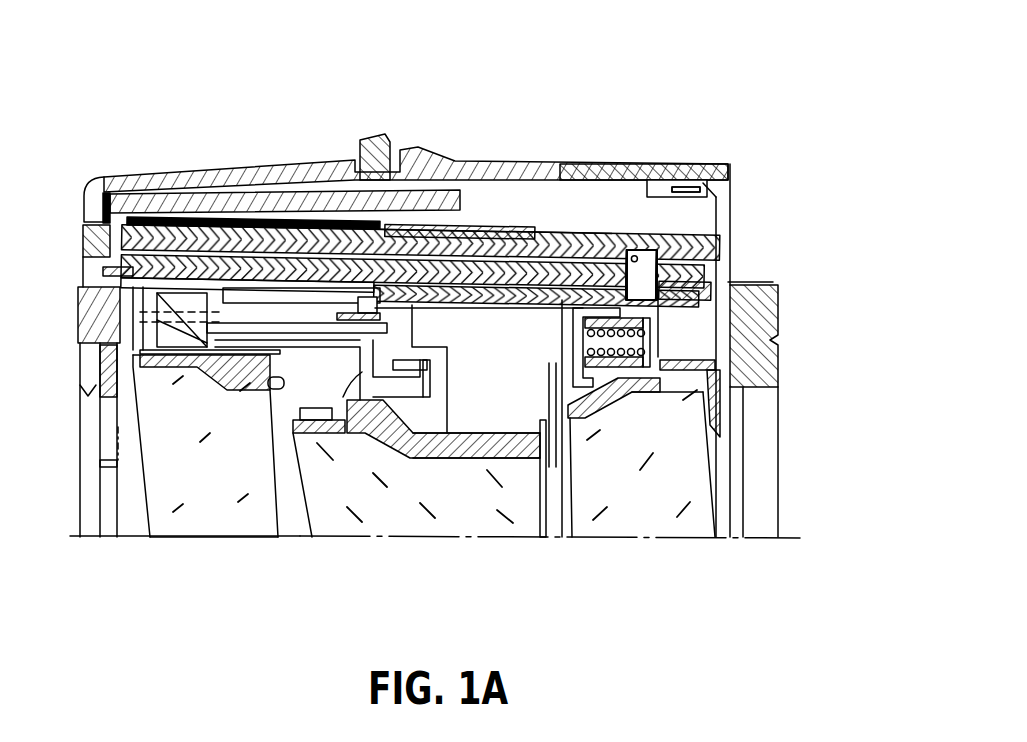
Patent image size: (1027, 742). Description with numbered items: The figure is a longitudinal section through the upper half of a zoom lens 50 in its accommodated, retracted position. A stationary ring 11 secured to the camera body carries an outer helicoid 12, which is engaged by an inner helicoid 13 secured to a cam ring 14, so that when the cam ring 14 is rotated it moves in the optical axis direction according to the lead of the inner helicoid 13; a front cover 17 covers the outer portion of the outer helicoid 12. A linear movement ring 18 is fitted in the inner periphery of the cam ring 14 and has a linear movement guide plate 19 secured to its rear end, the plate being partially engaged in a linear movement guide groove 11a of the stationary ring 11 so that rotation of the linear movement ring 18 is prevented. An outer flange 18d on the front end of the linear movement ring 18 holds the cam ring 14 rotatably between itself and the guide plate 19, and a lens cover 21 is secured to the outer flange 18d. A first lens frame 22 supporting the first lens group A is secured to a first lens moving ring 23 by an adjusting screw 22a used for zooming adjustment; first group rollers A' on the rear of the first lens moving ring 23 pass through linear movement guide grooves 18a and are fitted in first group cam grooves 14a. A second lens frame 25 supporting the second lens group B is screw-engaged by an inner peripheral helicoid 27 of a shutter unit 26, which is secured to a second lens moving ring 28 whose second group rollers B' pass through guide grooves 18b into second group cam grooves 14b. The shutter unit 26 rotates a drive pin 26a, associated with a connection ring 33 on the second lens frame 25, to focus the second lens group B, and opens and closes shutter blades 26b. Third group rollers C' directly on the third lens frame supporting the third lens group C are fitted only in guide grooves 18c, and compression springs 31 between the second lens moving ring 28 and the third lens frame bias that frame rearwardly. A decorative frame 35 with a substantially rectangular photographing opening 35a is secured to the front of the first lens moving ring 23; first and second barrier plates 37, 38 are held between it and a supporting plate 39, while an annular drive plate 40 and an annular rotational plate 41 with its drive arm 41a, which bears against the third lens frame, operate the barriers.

The pressure actuated clutch assembly 50 is at (108, 72).
The stationary ring 11 is at (752, 300).
The linear movement guide groove 11a is at (650, 190).
The outer helicoid 12 is at (356, 200).
The inner helicoid 13 is at (487, 207).
The cam ring 14 is at (607, 247).
The first group cam grooves 14a is at (630, 247).
The second group cam grooves 14b is at (686, 189).
The front cover 17 is at (240, 172).
The linear movement ring 18 is at (176, 262).
The linear movement guide grooves 18a is at (656, 272).
The linear movement guide grooves 18b is at (641, 275).
The linear movement guide grooves 18c is at (641, 275).
The outer flange 18d is at (86, 241).
The linear movement guide plate 19 is at (712, 216).
The lens cover 21 is at (95, 210).
The first lens frame 22 is at (227, 401).
The adjusting screw 22a is at (181, 362).
The first lens moving ring 23 is at (197, 300).
The second lens frame 25 is at (480, 461).
The shutter unit 26 is at (513, 420).
The drive pin 26a is at (414, 352).
The shutter blades 26b is at (557, 467).
The inner peripheral helicoid 27 is at (455, 459).
The second lens moving ring 28 is at (575, 343).
The compression springs 31 is at (620, 374).
The connection ring 33 is at (353, 424).
The decorative frame 35 is at (85, 305).
The photographing opening 35a is at (84, 395).
The first barrier plates 37 is at (110, 522).
The second barrier plates 38 is at (95, 478).
The supporting plate 39 is at (112, 318).
The annular drive plate 40 is at (100, 275).
The annular rotational plate 41 is at (148, 297).
The drive arm 41a is at (300, 320).
The first lens group A is at (214, 553).
The second lens group B is at (403, 509).
The third lens group C is at (642, 487).
The first group rollers A' is at (730, 224).
The second group rollers B' is at (642, 275).
The third group rollers C' is at (642, 275).